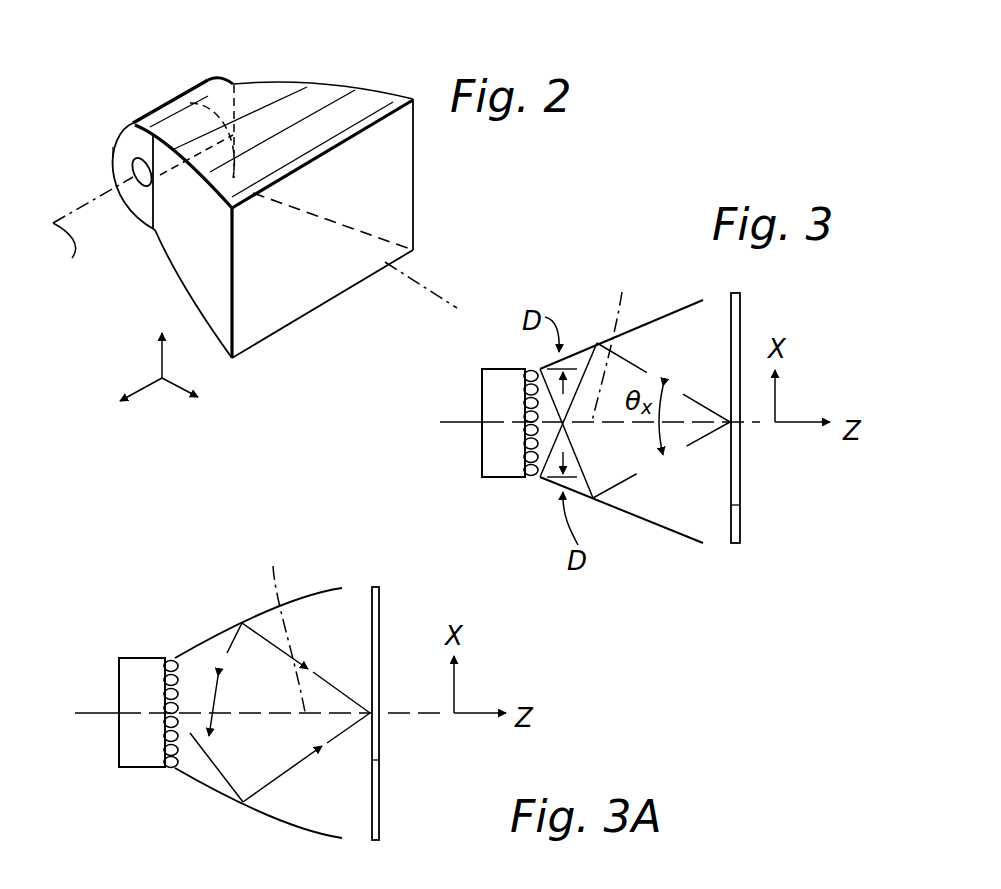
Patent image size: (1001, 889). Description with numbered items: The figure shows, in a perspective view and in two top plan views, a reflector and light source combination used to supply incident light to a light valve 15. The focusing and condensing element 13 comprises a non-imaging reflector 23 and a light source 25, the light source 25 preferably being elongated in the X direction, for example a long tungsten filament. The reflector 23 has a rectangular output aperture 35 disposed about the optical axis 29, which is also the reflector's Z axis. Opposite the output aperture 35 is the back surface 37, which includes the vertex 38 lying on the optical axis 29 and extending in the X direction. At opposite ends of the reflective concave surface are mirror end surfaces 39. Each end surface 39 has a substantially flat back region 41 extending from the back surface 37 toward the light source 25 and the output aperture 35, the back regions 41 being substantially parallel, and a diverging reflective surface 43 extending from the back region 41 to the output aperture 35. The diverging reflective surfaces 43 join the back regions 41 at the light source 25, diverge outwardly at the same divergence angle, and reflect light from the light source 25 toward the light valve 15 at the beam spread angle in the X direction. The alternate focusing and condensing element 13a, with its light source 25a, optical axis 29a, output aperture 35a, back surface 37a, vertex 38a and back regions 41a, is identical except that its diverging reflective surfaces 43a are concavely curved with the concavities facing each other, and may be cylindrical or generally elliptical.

In FIG. 2, the focusing and condensing element 13 is at (363, 20).
In FIG. 3, the light valve 15 is at (742, 303).
In FIG. 3A, the light valve 15 is at (380, 600).
In FIG. 2, the reflector 23 is at (378, 86).
In FIG. 2, the light source 25 is at (140, 186).
In FIG. 3, the light source 25 is at (546, 437).
In FIG. 2, the optical axis 29 is at (434, 296).
In FIG. 3, the optical axis 29 is at (621, 341).
In FIG. 2, the output aperture 35 is at (387, 157).
In FIG. 3, the output aperture 35 is at (708, 517).
In FIG. 2, the back surface 37 is at (133, 123).
In FIG. 3, the back surface 37 is at (482, 390).
In FIG. 2, the vertex 38 is at (171, 101).
In FIG. 3, the vertex 38 is at (481, 452).
In FIG. 3, the end surfaces 39 is at (574, 348).
In FIG. 2, the back region 41 is at (113, 152).
In FIG. 3, the back region 41 is at (503, 369).
In FIG. 3, the diverging reflective surface 43 is at (658, 322).
In FIG. 3A, the focusing and condensing element 13a is at (108, 672).
In FIG. 3A, the light source 25a is at (178, 691).
In FIG. 3A, the optical axis 29a is at (271, 624).
In FIG. 3A, the output aperture 35a is at (380, 758).
In FIG. 3A, the back surface 37a is at (119, 730).
In FIG. 3A, the vertex 38a is at (119, 697).
In FIG. 3A, the back region 41a is at (154, 658).
In FIG. 3A, the diverging reflective surface 43a is at (317, 593).